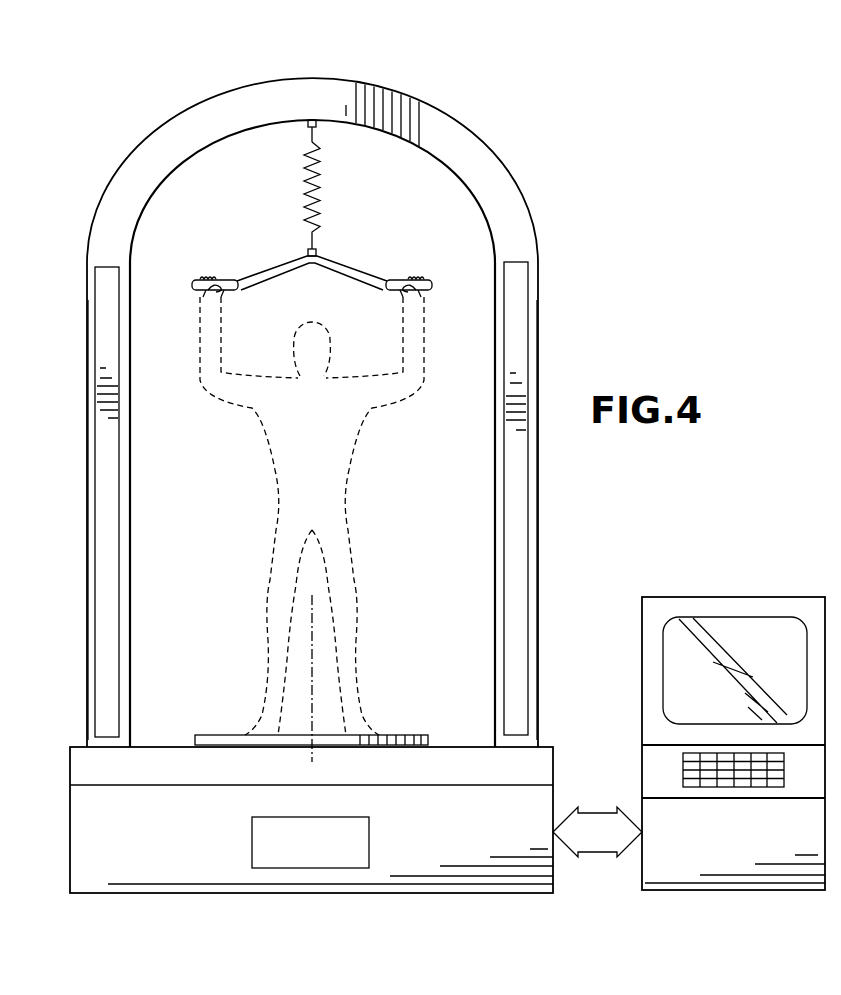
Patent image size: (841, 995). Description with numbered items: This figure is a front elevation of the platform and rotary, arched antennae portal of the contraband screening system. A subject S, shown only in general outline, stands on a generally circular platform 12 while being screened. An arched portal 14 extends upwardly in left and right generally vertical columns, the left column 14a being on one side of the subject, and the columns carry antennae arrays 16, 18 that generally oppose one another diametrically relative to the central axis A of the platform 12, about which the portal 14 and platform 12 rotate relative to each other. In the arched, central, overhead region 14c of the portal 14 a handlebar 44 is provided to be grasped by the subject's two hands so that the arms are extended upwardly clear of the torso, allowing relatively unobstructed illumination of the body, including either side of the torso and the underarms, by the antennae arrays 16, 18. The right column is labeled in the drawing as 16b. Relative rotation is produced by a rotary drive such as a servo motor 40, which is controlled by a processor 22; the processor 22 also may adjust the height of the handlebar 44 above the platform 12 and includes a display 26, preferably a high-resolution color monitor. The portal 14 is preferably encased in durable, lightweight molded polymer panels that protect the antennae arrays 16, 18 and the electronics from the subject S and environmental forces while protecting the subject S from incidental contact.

The arched portal 14 is at (468, 119).
The left vertical column 14a is at (74, 291).
The arched central overhead region 14c is at (240, 72).
The antennae array 16 is at (110, 491).
The right leg of frame 16b is at (550, 290).
The antennae array 18 is at (522, 484).
The circular platform 12 is at (403, 735).
The servo motor 40 is at (330, 852).
The handlebar 44 is at (275, 268).
The processor 22 is at (624, 626).
The display 26 is at (745, 620).
The subject S is at (353, 527).
The central axis A is at (312, 774).